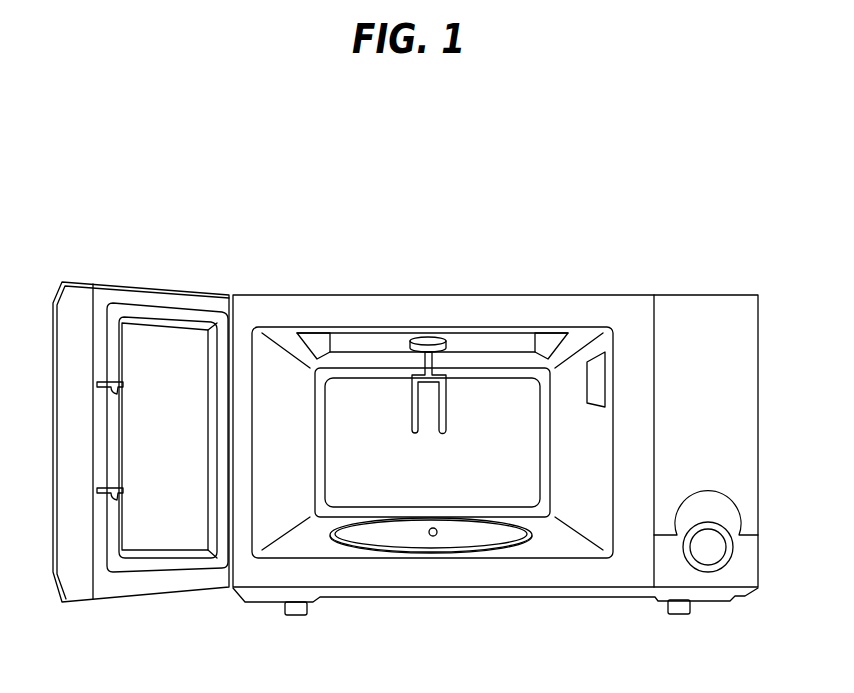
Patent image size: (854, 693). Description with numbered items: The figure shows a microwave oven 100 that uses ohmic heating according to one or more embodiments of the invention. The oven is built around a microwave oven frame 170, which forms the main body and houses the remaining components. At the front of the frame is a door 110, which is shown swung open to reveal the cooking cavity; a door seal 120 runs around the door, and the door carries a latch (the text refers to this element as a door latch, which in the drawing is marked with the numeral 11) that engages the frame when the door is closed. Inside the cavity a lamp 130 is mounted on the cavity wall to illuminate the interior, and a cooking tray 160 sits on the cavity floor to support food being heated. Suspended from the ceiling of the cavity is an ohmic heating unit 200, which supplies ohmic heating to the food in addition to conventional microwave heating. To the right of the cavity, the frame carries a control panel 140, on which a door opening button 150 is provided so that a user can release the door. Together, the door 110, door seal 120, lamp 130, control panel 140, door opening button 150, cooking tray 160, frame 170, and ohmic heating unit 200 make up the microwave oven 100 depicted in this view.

The microwave oven 100 is at (546, 283).
The door 110 is at (144, 585).
The door seal 120 is at (173, 317).
The lamp 130 is at (597, 368).
The control panel 140 is at (722, 313).
The door opening button 150 is at (708, 556).
The cooking tray 160 is at (386, 538).
The microwave oven frame 170 is at (518, 575).
The ohmic heating unit 200 is at (453, 341).
The latch hooks 11 is at (100, 388).